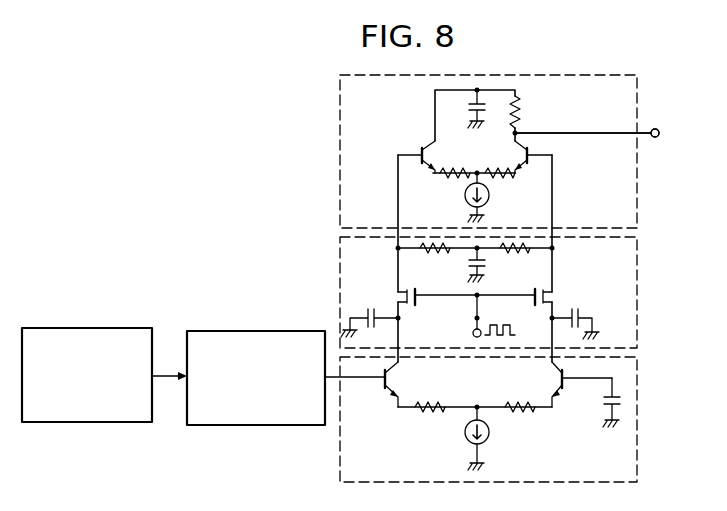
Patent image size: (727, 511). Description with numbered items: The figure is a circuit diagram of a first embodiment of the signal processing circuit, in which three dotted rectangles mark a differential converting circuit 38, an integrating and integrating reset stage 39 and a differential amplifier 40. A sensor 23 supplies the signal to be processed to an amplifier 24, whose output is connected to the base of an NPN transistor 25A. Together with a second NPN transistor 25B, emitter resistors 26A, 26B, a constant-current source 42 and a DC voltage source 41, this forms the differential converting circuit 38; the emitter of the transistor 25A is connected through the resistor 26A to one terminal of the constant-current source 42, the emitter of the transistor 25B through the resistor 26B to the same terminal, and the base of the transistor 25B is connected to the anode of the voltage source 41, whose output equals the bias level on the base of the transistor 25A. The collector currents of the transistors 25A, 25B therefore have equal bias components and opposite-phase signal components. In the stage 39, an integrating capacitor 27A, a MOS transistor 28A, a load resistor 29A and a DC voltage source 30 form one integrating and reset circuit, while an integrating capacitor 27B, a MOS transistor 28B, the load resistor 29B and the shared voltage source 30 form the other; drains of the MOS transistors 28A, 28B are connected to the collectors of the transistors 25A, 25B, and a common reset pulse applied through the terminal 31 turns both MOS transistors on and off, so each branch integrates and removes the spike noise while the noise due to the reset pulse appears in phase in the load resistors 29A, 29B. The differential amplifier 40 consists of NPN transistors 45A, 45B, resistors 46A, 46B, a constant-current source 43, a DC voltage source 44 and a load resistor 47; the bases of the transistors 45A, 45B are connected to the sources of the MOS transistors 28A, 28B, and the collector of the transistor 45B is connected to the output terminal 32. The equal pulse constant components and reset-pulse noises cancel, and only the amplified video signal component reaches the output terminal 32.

The sensor 23 is at (95, 328).
The amplifier 24 is at (238, 331).
The NPN transistor 25A is at (399, 379).
The NPN transistor 25B is at (560, 378).
The resistor 26A is at (436, 417).
The resistor 26B is at (508, 417).
The integrating capacitor 27A is at (370, 306).
The integrating capacitor 27B is at (572, 309).
The MOS transistor 28A is at (413, 300).
The MOS transistor 28B is at (538, 289).
The load resistor 29A is at (430, 256).
The load resistor 29B is at (520, 256).
The DC voltage source 30 is at (468, 262).
The terminal 31 is at (472, 334).
The output terminal 32 is at (655, 129).
The differential converting circuit 38 is at (639, 393).
The integrating and integrating reset circuit 39 is at (638, 298).
The differential amplifier 40 is at (638, 200).
The DC voltage source 41 is at (605, 401).
The constant-current source 42 is at (488, 443).
The constant-current source 43 is at (488, 201).
The DC voltage source 44 is at (465, 107).
The NPN transistor 45A is at (421, 149).
The NPN transistor 45B is at (526, 155).
The resistor 46A is at (458, 177).
The resistor 46B is at (494, 177).
The load resistor 47 is at (519, 110).